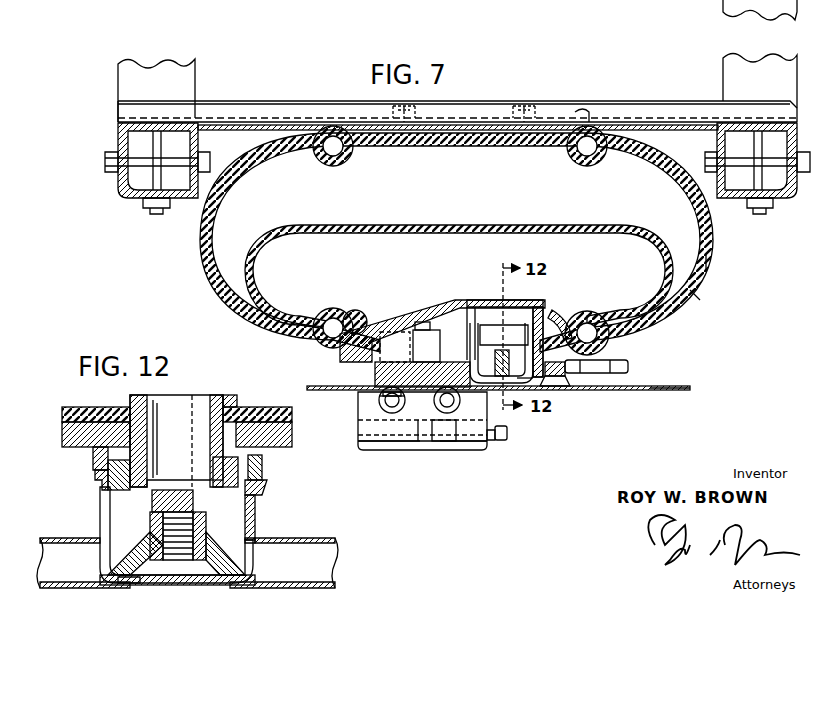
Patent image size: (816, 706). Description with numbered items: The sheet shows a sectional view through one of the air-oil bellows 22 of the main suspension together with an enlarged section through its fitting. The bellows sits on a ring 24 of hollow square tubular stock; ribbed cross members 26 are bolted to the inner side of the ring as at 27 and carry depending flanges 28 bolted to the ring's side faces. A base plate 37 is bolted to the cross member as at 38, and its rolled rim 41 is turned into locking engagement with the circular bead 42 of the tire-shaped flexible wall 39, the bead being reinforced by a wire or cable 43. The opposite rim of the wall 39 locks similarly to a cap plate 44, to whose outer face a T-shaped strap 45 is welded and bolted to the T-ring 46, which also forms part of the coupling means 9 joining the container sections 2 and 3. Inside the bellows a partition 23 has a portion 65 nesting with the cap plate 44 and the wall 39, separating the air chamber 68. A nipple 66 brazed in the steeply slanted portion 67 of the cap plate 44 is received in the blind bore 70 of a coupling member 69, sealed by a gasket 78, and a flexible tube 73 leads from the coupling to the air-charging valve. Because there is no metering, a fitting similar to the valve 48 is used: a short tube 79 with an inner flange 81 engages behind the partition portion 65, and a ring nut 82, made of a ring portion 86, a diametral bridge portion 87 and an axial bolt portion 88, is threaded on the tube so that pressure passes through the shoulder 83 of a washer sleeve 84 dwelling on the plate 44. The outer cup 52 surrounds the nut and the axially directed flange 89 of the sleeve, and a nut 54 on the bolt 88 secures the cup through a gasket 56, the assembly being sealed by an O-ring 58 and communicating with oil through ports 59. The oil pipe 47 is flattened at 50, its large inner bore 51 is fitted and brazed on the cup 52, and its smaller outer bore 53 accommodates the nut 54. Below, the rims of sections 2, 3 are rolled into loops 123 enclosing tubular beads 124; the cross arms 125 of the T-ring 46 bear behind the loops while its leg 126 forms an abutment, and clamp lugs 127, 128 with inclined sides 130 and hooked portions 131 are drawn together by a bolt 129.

In FIG. 7, the main section of container 2 is at (310, 391).
In FIG. 7, the main section of container 3 is at (650, 391).
In FIG. 7, the coupling means 9 is at (405, 455).
In FIG. 7, the air-oil bellows 22 is at (716, 244).
In FIG. 7, the partition 23 is at (616, 226).
In FIG. 12, the partition 23 is at (61, 412).
In FIG. 7, the ring 24 is at (117, 142).
In FIG. 7, the cross member 26 is at (296, 100).
In FIG. 7, the bolted connection 27 is at (190, 98).
In FIG. 7, the depending flange 28 is at (200, 140).
In FIG. 7, the base plate 37 is at (485, 125).
In FIG. 7, the bolted connection 38 is at (412, 132).
In FIG. 7, the flexible wall 39 is at (710, 262).
In FIG. 7, the rolled rim 41 is at (313, 144).
In FIG. 7, the circular bead 42 is at (606, 144).
In FIG. 7, the wire or cable 43 is at (584, 122).
In FIG. 7, the cap plate 44 is at (356, 355).
In FIG. 12, the cap plate 44 is at (294, 440).
In FIG. 7, the T-shaped strap 45 is at (420, 345).
In FIG. 7, the T-ring 46 is at (373, 372).
In FIG. 12, the pipe 47 is at (330, 538).
In FIG. 7, the metering valve 48 is at (545, 300).
In FIG. 12, the flattened portion of pipe 50 is at (62, 537).
In FIG. 12, the inner bore 51 is at (257, 535).
In FIG. 7, the outer cup 52 is at (551, 375).
In FIG. 12, the outer cup 52 is at (257, 515).
In FIG. 12, the outer bore 53 is at (128, 586).
In FIG. 7, the nut 54 is at (515, 380).
In FIG. 12, the nut 54 is at (170, 585).
In FIG. 12, the gasket 56 is at (226, 565).
In FIG. 12, the O-ring 58 is at (268, 486).
In FIG. 7, the port 59 is at (501, 353).
In FIG. 12, the port 59 is at (100, 552).
In FIG. 7, the portion of partition 65 is at (320, 318).
In FIG. 12, the portion of partition 65 is at (240, 403).
In FIG. 7, the nipple 66 is at (560, 312).
In FIG. 7, the steeply slanted portion 67 is at (608, 338).
In FIG. 7, the air chamber 68 is at (685, 283).
In FIG. 7, the coupling member 69 is at (562, 382).
In FIG. 7, the blind bore 70 is at (512, 360).
In FIG. 7, the flexible tube 73 is at (630, 364).
In FIG. 7, the gasket 78 is at (520, 347).
In FIG. 12, the short tube 79 is at (210, 435).
In FIG. 7, the inner flange 81 is at (500, 300).
In FIG. 12, the inner flange 81 is at (242, 412).
In FIG. 12, the ring nut 82 is at (225, 490).
In FIG. 12, the shoulder 83 is at (118, 490).
In FIG. 12, the washer sleeve 84 is at (92, 458).
In FIG. 12, the ring portion 86 is at (263, 462).
In FIG. 12, the diametral bridge portion 87 is at (150, 505).
In FIG. 12, the axial bolt portion 88 is at (162, 530).
In FIG. 12, the axially directed flange 89 is at (100, 488).
In FIG. 7, the rolled rim loop 123 is at (385, 405).
In FIG. 7, the tubular metal bead 124 is at (462, 402).
In FIG. 7, the cross arm 125 is at (382, 394).
In FIG. 7, the leg 126 is at (497, 427).
In FIG. 7, the clamp lug 127 is at (395, 452).
In FIG. 7, the clamp lug 128 is at (462, 452).
In FIG. 7, the bolt 129 is at (508, 434).
In FIG. 7, the side of lug 130 is at (444, 442).
In FIG. 7, the hooked portion 131 is at (380, 400).